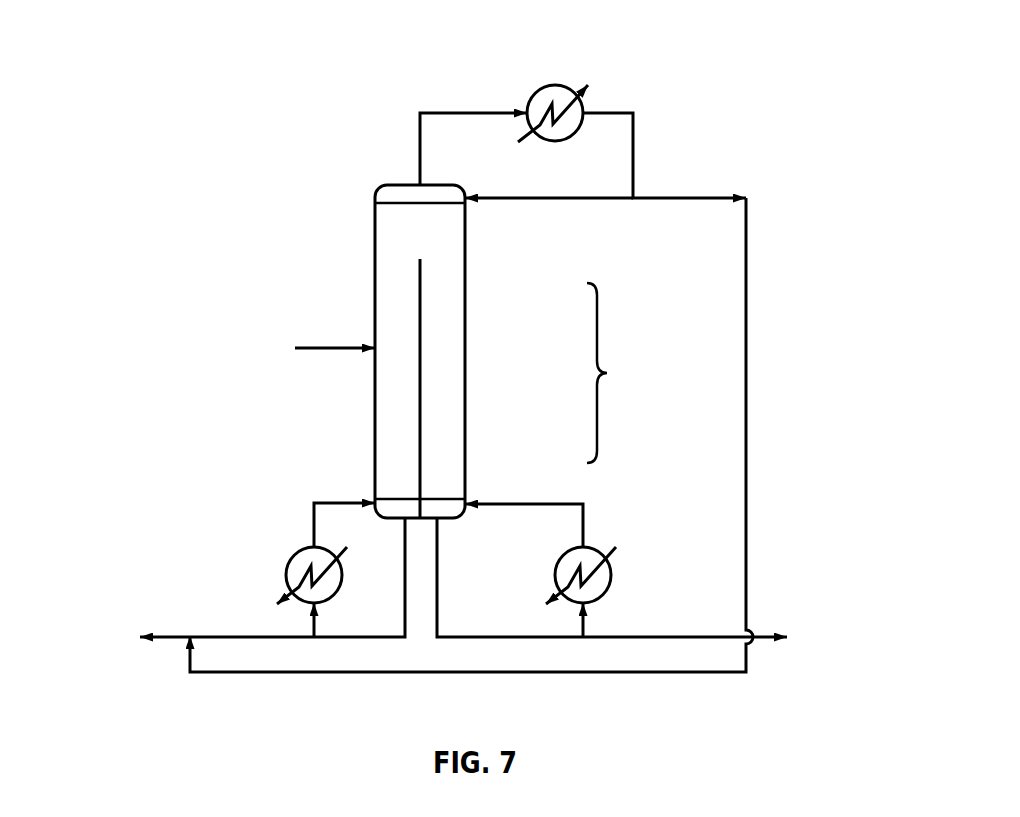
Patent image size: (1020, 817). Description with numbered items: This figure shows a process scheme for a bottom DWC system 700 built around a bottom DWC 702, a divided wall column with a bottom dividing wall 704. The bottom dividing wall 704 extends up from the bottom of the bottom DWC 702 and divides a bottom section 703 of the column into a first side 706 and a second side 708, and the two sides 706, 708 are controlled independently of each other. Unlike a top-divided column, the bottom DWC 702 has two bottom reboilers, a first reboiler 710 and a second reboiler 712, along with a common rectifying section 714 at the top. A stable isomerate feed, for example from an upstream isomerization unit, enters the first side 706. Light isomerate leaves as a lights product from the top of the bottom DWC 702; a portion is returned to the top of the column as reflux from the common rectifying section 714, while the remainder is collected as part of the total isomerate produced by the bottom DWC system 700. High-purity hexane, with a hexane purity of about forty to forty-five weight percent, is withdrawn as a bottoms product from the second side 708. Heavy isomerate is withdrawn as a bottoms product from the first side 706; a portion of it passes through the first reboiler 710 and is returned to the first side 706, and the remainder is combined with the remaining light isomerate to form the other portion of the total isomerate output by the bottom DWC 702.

The bottom DWC system 700 is at (360, 48).
The bottom DWC 702 is at (484, 272).
The bottom section 703 is at (620, 373).
The bottom dividing wall 704 is at (420, 272).
The first side 706 is at (383, 460).
The second side 708 is at (462, 470).
The first reboiler 710 is at (291, 560).
The second reboiler 712 is at (558, 562).
The common rectifying section 714 is at (534, 92).